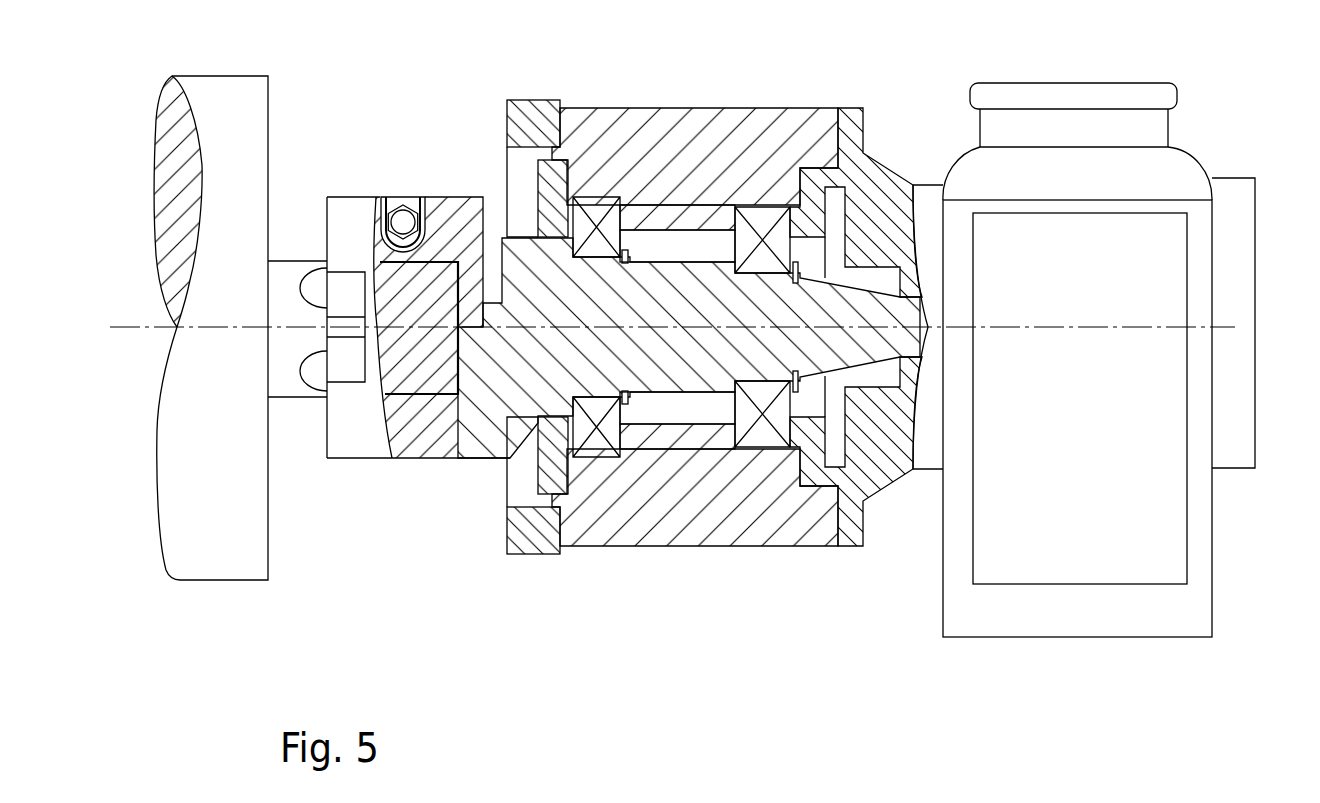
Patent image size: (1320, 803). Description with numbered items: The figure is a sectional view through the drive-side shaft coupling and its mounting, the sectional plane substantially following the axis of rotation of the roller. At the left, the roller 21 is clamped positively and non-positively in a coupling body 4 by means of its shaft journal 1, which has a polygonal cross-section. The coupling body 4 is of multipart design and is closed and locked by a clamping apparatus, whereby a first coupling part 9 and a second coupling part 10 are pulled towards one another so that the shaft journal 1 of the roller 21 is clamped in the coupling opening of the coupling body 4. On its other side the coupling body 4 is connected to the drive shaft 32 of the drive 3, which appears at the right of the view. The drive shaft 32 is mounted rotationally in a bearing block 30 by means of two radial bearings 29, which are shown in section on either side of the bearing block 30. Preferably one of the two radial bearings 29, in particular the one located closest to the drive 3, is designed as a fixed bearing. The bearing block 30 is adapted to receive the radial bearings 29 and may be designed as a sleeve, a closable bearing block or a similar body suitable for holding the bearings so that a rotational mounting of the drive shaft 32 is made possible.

The shaft journal 1 is at (277, 293).
The drive 3 is at (1205, 163).
The coupling body 4 is at (342, 220).
The first coupling part 9 is at (366, 470).
The second coupling part 10 is at (450, 227).
The roller 21 is at (233, 517).
The radial bearings 29 is at (597, 213).
The bearing block 30 is at (645, 560).
The drive shaft 32 is at (813, 310).